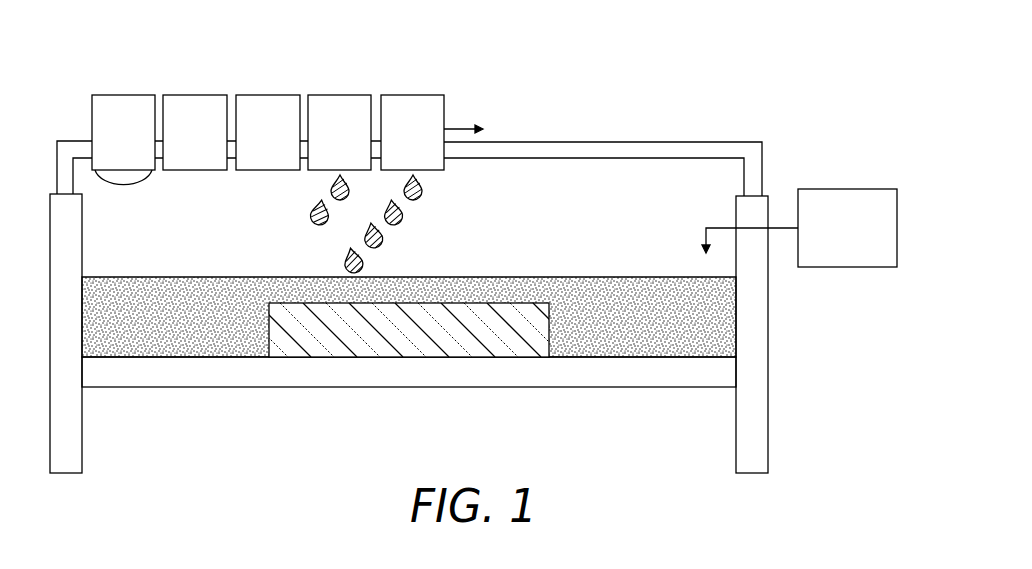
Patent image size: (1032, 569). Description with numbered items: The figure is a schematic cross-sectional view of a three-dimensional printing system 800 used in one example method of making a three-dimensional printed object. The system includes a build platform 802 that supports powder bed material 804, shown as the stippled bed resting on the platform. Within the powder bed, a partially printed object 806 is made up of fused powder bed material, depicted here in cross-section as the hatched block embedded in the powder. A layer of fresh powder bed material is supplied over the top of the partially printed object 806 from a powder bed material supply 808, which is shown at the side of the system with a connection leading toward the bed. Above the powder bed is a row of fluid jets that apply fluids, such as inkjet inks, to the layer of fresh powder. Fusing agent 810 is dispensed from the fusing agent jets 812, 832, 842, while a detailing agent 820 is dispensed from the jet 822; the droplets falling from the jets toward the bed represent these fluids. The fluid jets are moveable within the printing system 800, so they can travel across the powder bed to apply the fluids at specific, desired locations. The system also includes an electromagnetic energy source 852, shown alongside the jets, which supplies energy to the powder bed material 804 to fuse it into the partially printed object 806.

The 3D printing system 800 is at (108, 57).
The build platform 802 is at (641, 378).
The powder bed material 804 is at (183, 338).
The partially printed object 806 is at (413, 347).
The powder bed material supply 808 is at (866, 243).
The fusing agent 810 is at (403, 214).
The fusing agent jet 812 is at (431, 147).
The detailing agent 820 is at (311, 219).
The jet 822 is at (358, 147).
The fusing agent jet 832 is at (287, 147).
The fusing agent jet 842 is at (214, 147).
The electromagnetic energy source 852 is at (142, 147).